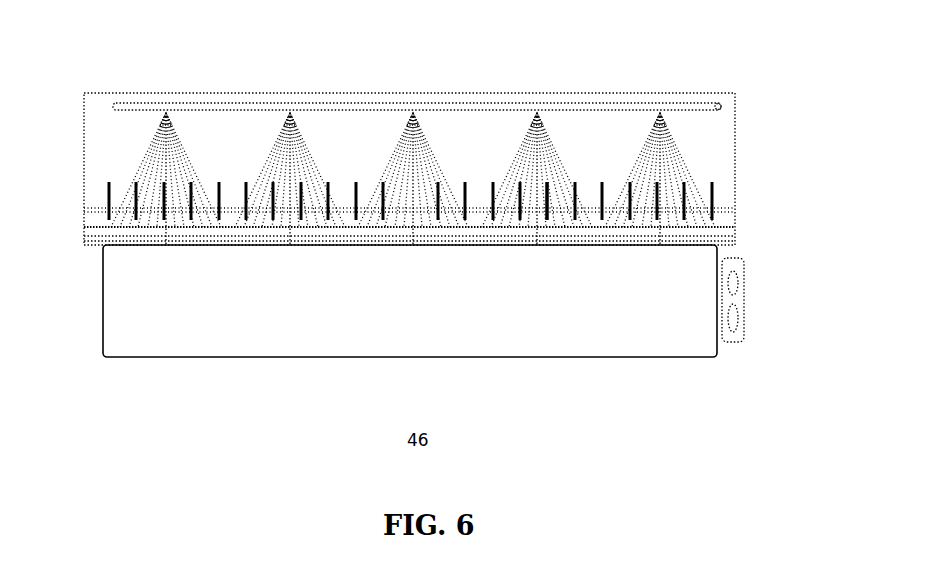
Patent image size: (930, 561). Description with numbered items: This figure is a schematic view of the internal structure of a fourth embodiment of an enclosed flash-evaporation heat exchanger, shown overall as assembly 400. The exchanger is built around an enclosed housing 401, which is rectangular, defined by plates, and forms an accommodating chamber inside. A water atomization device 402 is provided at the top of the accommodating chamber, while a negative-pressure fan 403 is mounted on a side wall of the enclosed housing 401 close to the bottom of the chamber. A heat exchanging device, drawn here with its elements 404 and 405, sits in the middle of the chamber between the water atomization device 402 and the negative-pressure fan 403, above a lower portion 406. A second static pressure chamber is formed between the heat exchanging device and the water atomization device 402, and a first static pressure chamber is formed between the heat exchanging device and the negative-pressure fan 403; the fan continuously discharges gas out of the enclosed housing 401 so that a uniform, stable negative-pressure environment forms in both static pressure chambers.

The light source module 400 is at (119, 22).
The enclosed housing 401 is at (735, 190).
The water atomization device 402 is at (290, 130).
The negative-pressure fan 403 is at (728, 316).
The light guide pin 404 is at (548, 183).
The pin array 405 is at (88, 183).
The base plate 406 is at (239, 334).